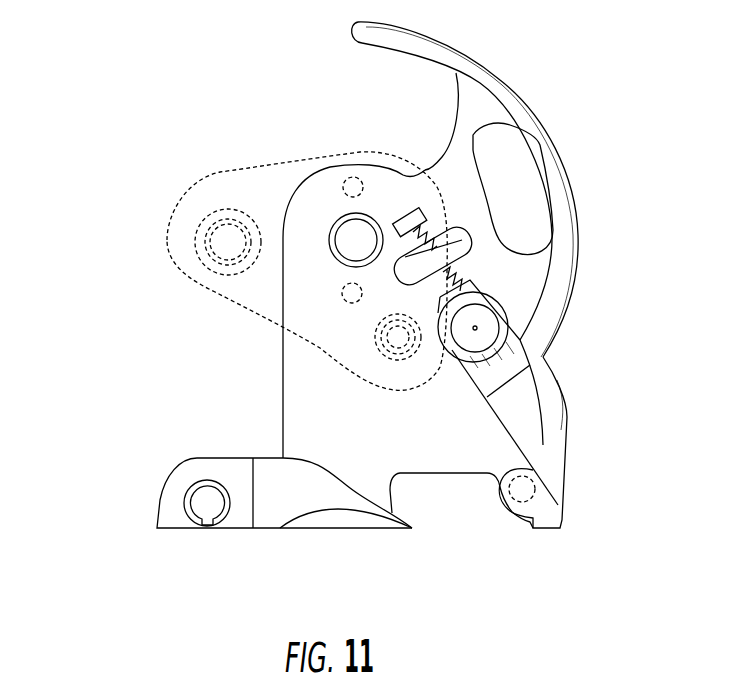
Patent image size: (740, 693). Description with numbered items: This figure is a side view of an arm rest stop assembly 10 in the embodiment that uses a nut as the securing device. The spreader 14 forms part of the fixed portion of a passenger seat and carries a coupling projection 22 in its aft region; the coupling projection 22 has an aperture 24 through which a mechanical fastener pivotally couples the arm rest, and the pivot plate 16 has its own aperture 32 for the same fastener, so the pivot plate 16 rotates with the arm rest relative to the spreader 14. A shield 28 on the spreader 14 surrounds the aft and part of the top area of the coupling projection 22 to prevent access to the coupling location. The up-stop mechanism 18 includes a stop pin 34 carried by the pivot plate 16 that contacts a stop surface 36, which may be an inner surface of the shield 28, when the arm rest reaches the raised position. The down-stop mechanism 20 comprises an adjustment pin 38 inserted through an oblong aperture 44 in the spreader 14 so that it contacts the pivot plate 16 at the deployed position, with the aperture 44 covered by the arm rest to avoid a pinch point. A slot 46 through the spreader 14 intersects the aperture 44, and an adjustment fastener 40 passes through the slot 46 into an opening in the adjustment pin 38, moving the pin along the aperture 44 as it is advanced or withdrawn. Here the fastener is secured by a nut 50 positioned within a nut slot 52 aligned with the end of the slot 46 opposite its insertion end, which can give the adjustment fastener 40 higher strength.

The arm rest stop assembly 10 is at (157, 125).
The spreader 14 is at (447, 447).
The pivot plate 16 is at (170, 213).
The up-stop mechanism 18 is at (200, 257).
The down-stop mechanism 20 is at (524, 341).
The coupling projection 22 is at (327, 193).
The aperture 24 is at (328, 237).
The shield 28 is at (533, 102).
The aperture 32 is at (356, 253).
The stop pin 34 is at (230, 250).
The stop surface 36 is at (461, 100).
The adjustment pin 38 is at (472, 333).
The adjustment fastener 40 is at (497, 397).
The aperture 44 is at (503, 311).
The slot 46 is at (556, 452).
The nut 50 is at (445, 252).
The nut slot 52 is at (477, 235).